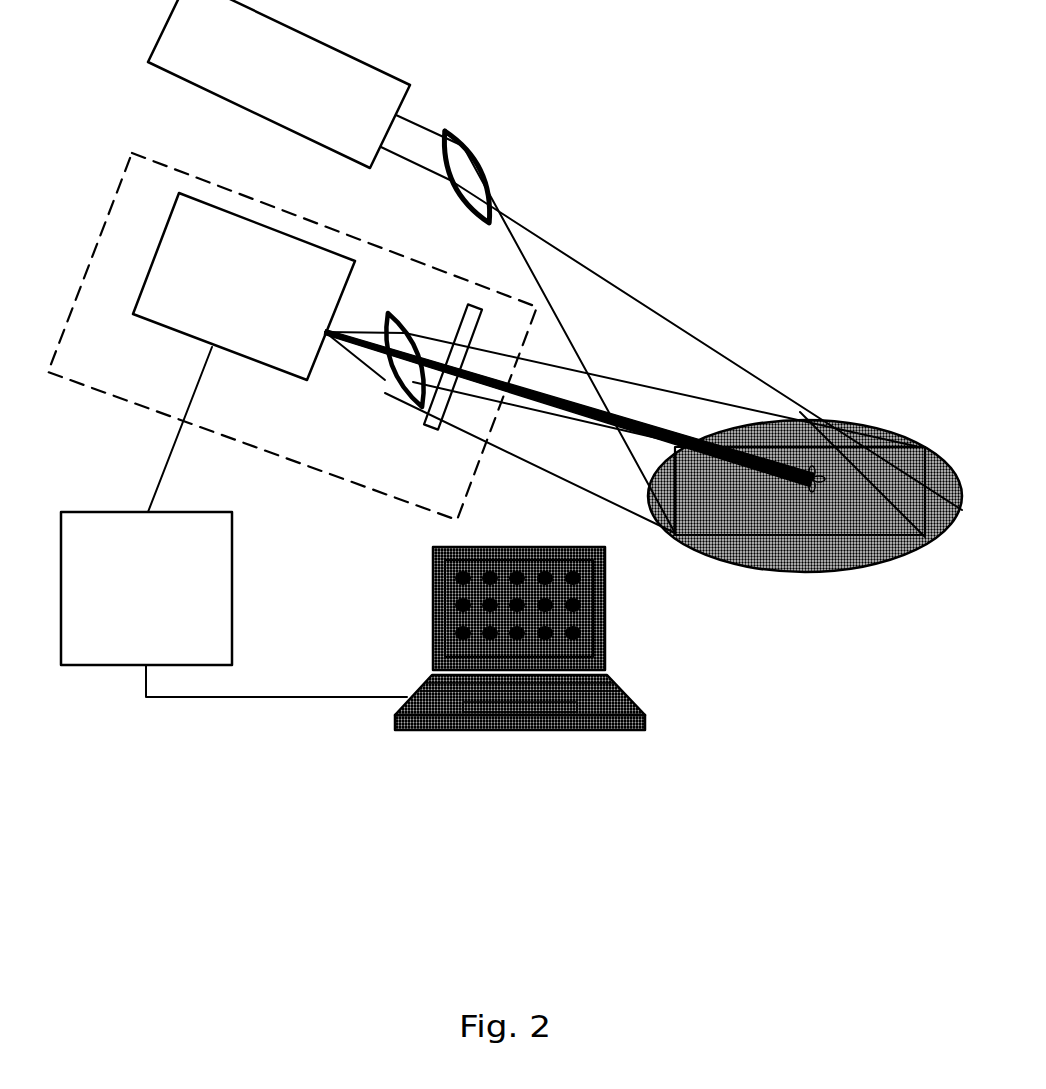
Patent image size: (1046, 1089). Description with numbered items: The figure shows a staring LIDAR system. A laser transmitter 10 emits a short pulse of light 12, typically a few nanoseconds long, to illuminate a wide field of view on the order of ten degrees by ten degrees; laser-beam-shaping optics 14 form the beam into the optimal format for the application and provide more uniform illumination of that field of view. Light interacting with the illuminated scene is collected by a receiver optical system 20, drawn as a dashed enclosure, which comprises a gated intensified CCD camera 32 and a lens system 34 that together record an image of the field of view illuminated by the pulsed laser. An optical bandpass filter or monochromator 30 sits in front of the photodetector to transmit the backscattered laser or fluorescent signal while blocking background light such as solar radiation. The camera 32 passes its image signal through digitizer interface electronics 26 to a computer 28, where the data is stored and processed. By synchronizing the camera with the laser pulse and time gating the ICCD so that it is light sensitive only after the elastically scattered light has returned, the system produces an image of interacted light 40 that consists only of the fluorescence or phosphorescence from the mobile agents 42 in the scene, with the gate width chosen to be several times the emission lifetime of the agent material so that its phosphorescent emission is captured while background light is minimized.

The laser transmitter 10 is at (279, 84).
The pulse of light 12 is at (528, 199).
The laser-beam-shaping optics 14 is at (482, 120).
The receiver optical system 20 is at (292, 336).
The gated intensified CCD camera 32 is at (244, 286).
The lens system 34 is at (375, 413).
The optical bandpass filter or monochromator 30 is at (422, 428).
The digitizer interface electronics 26 is at (234, 522).
The computer 28 is at (522, 735).
The image of interacted light 40 is at (757, 490).
The mobile agents 42 is at (803, 508).